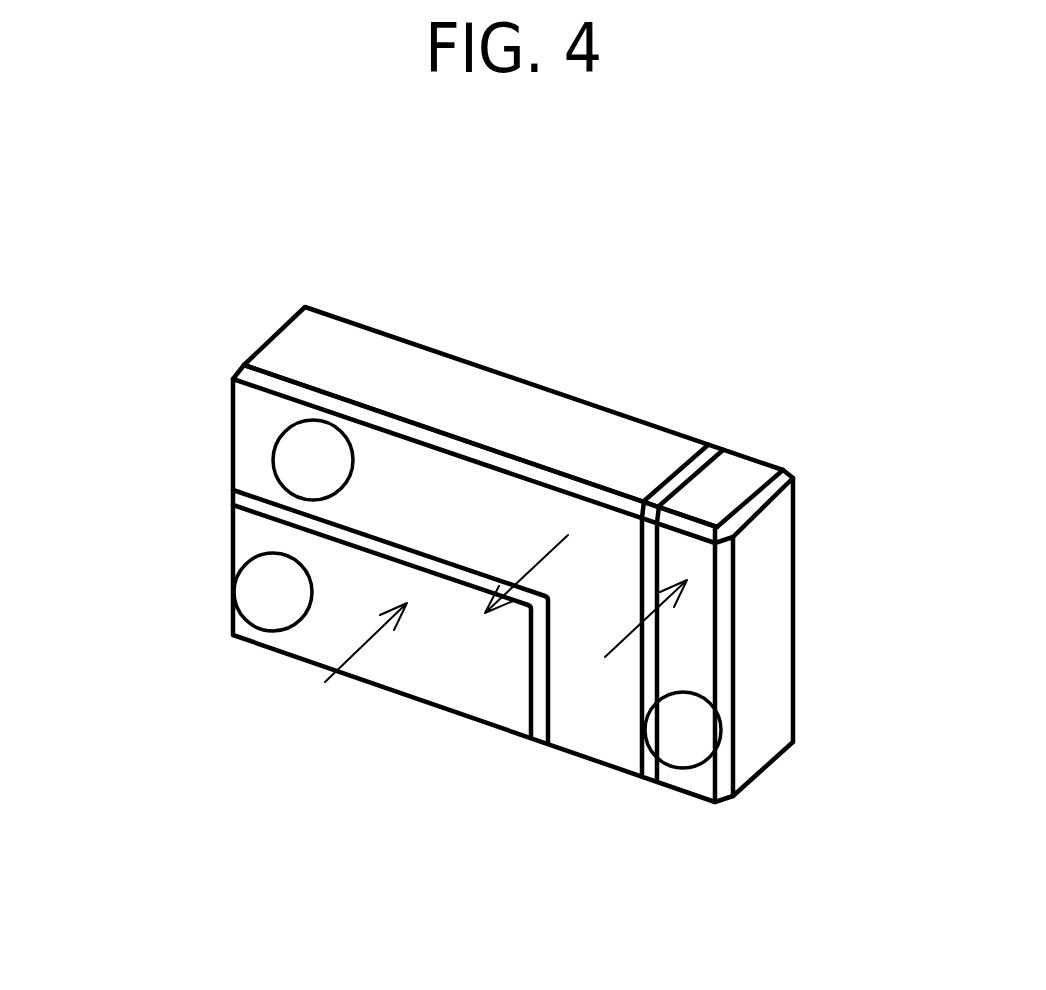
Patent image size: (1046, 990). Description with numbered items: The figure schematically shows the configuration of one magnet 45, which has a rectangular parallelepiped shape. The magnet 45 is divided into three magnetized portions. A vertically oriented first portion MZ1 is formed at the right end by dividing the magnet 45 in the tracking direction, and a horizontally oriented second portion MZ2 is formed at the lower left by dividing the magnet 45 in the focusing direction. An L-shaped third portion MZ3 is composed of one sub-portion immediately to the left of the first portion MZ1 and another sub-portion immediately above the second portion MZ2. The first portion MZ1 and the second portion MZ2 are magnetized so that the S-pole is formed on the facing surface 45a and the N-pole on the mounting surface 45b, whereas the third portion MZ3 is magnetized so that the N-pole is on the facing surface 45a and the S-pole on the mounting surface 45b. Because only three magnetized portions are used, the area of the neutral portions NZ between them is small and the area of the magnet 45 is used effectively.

The magnet 45 is at (510, 604).
The facing surface 45a is at (262, 447).
The mounting surface 45b is at (598, 405).
The first portion MZ1 is at (703, 628).
The second portion MZ2 is at (250, 637).
The third portion MZ3 is at (250, 468).
The neutral portions NZ is at (641, 770).